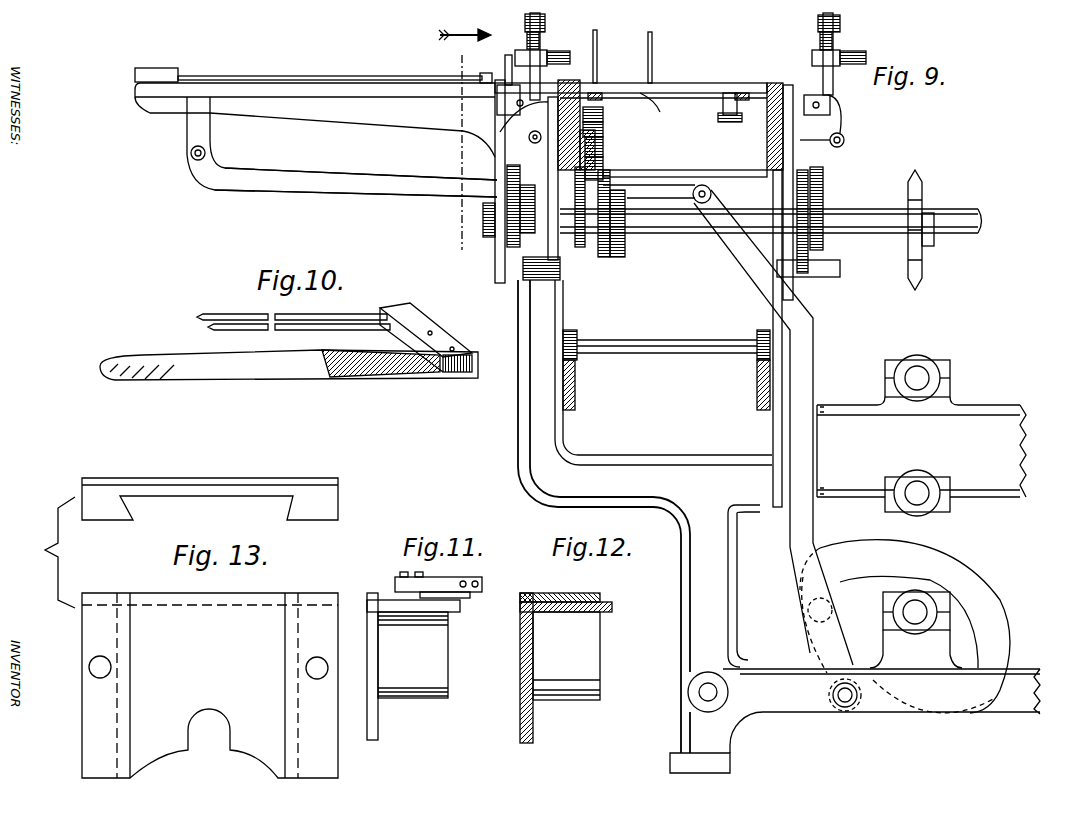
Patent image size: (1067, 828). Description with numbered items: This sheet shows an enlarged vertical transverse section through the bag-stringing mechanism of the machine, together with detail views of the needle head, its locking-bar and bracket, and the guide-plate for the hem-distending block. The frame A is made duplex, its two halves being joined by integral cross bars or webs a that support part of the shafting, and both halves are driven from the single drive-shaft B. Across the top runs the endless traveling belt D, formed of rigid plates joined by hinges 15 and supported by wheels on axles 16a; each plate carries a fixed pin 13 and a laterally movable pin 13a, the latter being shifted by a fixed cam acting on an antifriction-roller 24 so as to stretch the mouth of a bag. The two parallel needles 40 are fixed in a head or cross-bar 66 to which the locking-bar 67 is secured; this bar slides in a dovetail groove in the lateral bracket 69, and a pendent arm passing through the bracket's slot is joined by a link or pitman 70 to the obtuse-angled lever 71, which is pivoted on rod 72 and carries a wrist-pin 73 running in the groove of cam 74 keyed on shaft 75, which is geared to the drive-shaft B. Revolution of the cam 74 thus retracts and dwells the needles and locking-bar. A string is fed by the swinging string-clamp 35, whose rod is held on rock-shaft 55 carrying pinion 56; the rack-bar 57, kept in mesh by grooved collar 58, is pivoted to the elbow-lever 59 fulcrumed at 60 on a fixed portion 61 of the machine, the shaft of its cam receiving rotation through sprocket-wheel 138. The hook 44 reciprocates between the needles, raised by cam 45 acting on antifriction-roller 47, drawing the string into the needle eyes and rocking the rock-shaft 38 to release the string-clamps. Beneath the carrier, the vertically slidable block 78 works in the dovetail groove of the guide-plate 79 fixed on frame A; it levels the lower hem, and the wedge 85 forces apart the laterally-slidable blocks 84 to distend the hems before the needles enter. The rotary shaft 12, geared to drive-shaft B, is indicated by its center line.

In FIG. 9, the rotary shaft 12 is at (460, 151).
In FIG. 9, the holding and stretching pin 13 is at (607, 55).
In FIG. 9, the movable stretching pin 13a is at (666, 55).
In FIG. 9, the joint or hinge 15 is at (594, 93).
In FIG. 9, the axle 16a is at (673, 356).
In FIG. 9, the antifriction-roller 24 is at (715, 113).
In FIG. 9, the swinging string-clamp 35 is at (500, 101).
In FIG. 9, the rock-shaft 38 is at (516, 62).
In FIG. 9, the needle 40 is at (376, 77).
In FIG. 10, the needle 40 is at (293, 313).
In FIG. 11, the needle 40 is at (470, 594).
In FIG. 9, the hook 44 is at (505, 72).
In FIG. 9, the cam 45 is at (483, 232).
In FIG. 9, the antifriction-roller 47 is at (518, 168).
In FIG. 9, the rock-shaft 55 is at (565, 57).
In FIG. 9, the pinion 56 is at (543, 48).
In FIG. 9, the rack-bar 57 is at (526, 40).
In FIG. 9, the grooved collar 58 is at (524, 20).
In FIG. 9, the elbow-lever 59 is at (570, 250).
In FIG. 9, the fulcrum 60 is at (541, 278).
In FIG. 9, the fixed portion of the machine 61 is at (553, 180).
In FIG. 9, the head or cross-bar 66 is at (166, 68).
In FIG. 10, the head or cross-bar 66 is at (437, 325).
In FIG. 11, the head or cross-bar 66 is at (466, 580).
In FIG. 9, the locking-bar 67 is at (142, 88).
In FIG. 10, the locking-bar 67 is at (289, 365).
In FIG. 11, the locking-bar 67 is at (398, 598).
In FIG. 12, the locking-bar 67 is at (565, 602).
In FIG. 9, the lateral bracket or arm 69 is at (315, 127).
In FIG. 11, the lateral bracket or arm 69 is at (413, 655).
In FIG. 12, the lateral bracket or arm 69 is at (566, 656).
In FIG. 9, the link or pitman 70 is at (356, 178).
In FIG. 9, the obtuse-angled lever 71 is at (773, 427).
In FIG. 9, the rod 72 is at (845, 708).
In FIG. 9, the wrist-pin 73 is at (805, 609).
In FIG. 9, the cam 74 is at (942, 573).
In FIG. 9, the shaft 75 is at (940, 613).
In FIG. 9, the vertically slidable block 78 is at (604, 109).
In FIG. 9, the guide-plate 79 is at (604, 146).
In FIG. 13, the guide-plate 79 is at (191, 616).
In FIG. 9, the laterally-slidable block 84 is at (609, 124).
In FIG. 9, the wedge 85 is at (610, 164).
In FIG. 9, the sprocket-wheel 138 is at (933, 230).
In FIG. 9, the frame A is at (518, 403).
In FIG. 9, the drive-shaft B is at (922, 503).
In FIG. 9, the endless traveling belt D is at (631, 78).
In FIG. 9, the cross bar or web a is at (921, 447).